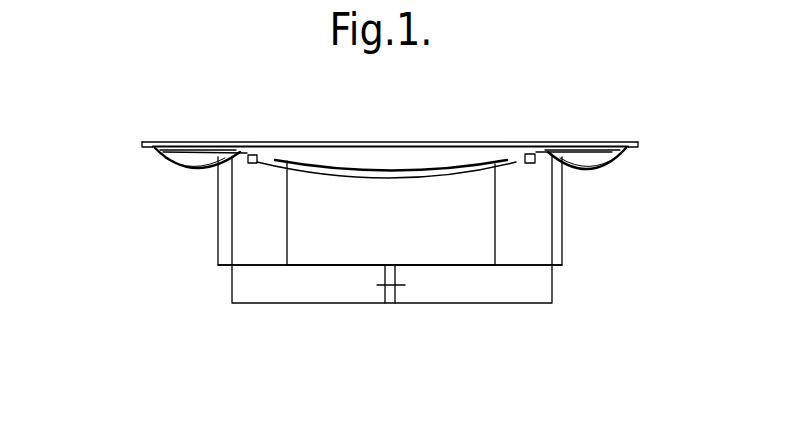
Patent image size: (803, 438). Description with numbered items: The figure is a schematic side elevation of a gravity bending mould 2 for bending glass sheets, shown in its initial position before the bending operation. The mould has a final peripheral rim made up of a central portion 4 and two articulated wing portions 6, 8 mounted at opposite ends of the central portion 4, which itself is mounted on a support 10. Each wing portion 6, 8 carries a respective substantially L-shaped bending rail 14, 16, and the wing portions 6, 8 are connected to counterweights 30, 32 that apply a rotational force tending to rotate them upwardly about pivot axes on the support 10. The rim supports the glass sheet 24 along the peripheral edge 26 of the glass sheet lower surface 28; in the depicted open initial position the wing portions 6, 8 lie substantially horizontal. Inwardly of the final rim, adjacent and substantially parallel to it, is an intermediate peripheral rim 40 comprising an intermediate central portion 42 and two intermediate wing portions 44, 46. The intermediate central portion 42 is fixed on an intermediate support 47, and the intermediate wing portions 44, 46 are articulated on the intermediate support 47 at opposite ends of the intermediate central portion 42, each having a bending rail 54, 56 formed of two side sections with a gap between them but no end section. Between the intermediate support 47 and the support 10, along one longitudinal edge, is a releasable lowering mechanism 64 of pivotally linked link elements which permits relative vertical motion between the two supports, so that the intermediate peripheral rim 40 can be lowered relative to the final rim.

The gravity bending mould 2 is at (650, 217).
The central portion 4 is at (390, 178).
The wing portion 6 is at (193, 168).
The wing portion 8 is at (588, 168).
The support 10 is at (553, 287).
The bending rail 14 is at (173, 165).
The bending rail 16 is at (618, 157).
The glass sheet 24 is at (449, 141).
The peripheral edge 26 is at (146, 149).
The glass sheet lower surface 28 is at (340, 147).
The counterweight 30 is at (250, 153).
The counterweight 32 is at (532, 152).
The intermediate peripheral rim 40 is at (437, 170).
The intermediate central portion 42 is at (334, 172).
The intermediate wing portion 44 is at (177, 152).
The intermediate wing portion 46 is at (600, 150).
The intermediate support 47 is at (565, 233).
The bending rail 54 is at (203, 152).
The bending rail 56 is at (569, 152).
The releasable lowering mechanism 64 is at (385, 288).